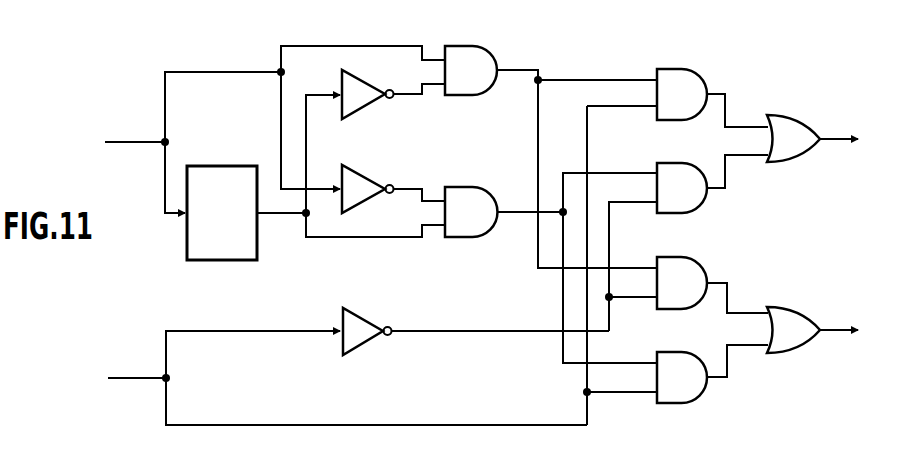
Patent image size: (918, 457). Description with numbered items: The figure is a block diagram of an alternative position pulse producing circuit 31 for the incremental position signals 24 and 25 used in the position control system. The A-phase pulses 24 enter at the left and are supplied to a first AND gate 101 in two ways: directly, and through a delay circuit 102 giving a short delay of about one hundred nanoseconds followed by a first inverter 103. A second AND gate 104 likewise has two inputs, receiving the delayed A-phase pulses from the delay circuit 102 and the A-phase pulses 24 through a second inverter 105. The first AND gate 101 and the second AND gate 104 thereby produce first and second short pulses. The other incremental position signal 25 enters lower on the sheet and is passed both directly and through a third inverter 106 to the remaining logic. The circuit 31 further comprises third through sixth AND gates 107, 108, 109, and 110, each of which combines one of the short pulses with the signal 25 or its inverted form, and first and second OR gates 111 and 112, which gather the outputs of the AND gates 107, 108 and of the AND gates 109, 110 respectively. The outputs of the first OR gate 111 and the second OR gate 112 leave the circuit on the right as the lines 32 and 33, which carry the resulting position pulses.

The A-phase pulses 24 is at (144, 138).
The incremental position signal 25 is at (150, 377).
The position pulse producing circuit 31 is at (740, 76).
The first output line 32 is at (827, 134).
The second output line 33 is at (828, 324).
The first AND gate 101 is at (480, 46).
The delay circuit 102 is at (238, 165).
The first inverter 103 is at (366, 61).
The second AND gate 104 is at (473, 184).
The second inverter 105 is at (366, 151).
The third inverter 106 is at (360, 315).
The third AND gate 107 is at (663, 120).
The fourth AND gate 108 is at (665, 215).
The fifth AND gate 109 is at (666, 309).
The sixth AND gate 110 is at (665, 404).
The first OR gate 111 is at (787, 163).
The second OR gate 112 is at (787, 353).